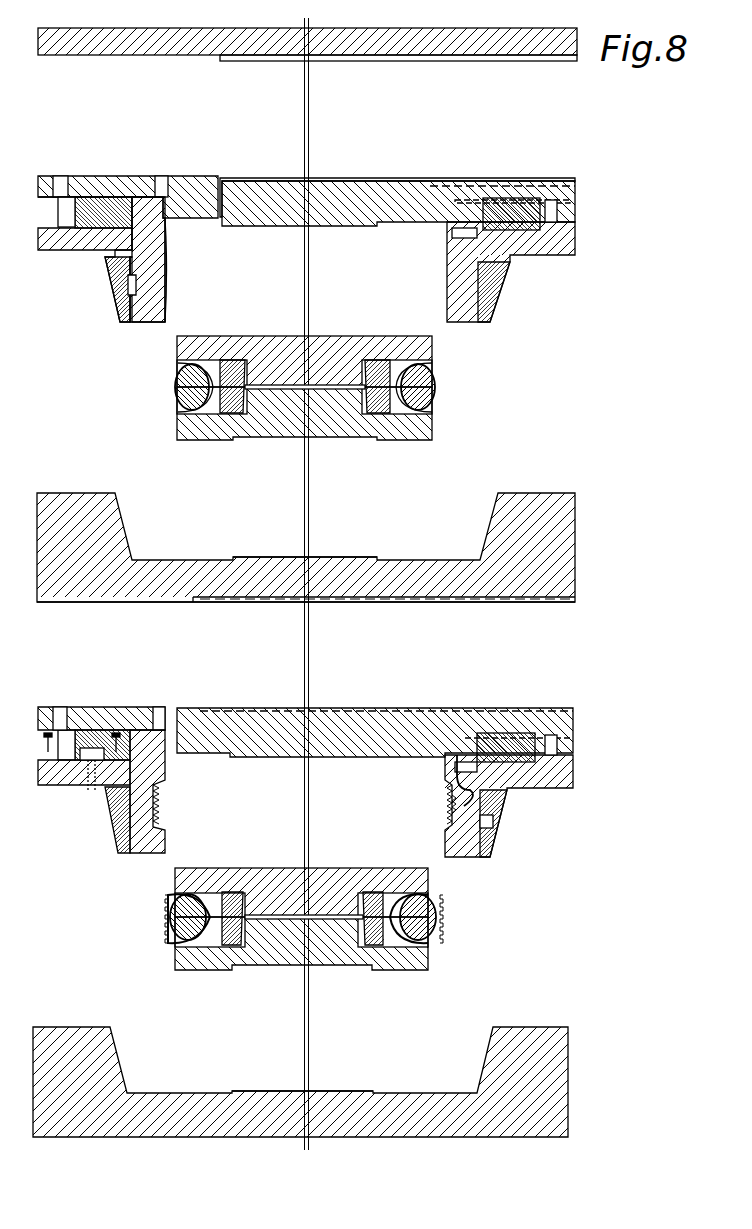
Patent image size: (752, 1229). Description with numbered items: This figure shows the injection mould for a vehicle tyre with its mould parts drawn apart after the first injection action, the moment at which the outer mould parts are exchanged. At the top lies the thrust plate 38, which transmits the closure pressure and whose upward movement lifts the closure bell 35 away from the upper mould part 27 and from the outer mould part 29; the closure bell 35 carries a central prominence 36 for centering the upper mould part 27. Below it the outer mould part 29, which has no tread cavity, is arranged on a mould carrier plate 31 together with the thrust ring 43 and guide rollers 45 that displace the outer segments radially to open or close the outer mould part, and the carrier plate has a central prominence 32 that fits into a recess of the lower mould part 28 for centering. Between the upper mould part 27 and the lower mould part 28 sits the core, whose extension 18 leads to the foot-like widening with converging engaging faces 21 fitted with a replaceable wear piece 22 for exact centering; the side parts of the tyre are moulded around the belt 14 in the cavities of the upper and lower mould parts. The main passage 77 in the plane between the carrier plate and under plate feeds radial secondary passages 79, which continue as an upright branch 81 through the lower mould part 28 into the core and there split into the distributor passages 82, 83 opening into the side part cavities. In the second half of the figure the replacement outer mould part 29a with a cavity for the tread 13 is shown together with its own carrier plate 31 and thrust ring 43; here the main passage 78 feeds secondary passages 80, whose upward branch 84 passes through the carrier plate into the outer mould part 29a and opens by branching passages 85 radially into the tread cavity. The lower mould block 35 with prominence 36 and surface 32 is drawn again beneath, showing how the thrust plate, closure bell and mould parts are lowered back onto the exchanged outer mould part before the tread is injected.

The tread 13 is at (165, 922).
The belt 14 is at (437, 392).
The extension 18 is at (166, 940).
The engaging faces 21 is at (365, 398).
The wear piece 22 is at (352, 340).
The upper mould part 27 is at (432, 428).
The lower mould part 28 is at (432, 345).
The outer mould part 29 is at (502, 293).
The outer mould part 29a is at (497, 838).
The mould carrier plate 31 is at (440, 182).
The central prominence 32 is at (352, 557).
The closure bell 35 is at (557, 505).
The central prominence 36 is at (354, 226).
The thrust plate 38 is at (190, 52).
The thrust ring 43 is at (520, 205).
The guide rollers 45 is at (92, 755).
The main passage 77 is at (420, 177).
The main passage 78 is at (466, 600).
The secondary passages 79 is at (221, 177).
The secondary passages 80 is at (252, 604).
The branch 81 is at (221, 338).
The distributor passage 82 is at (176, 381).
The distributor passage 83 is at (178, 404).
The branch 84 is at (470, 758).
The branching passages 85 is at (450, 795).